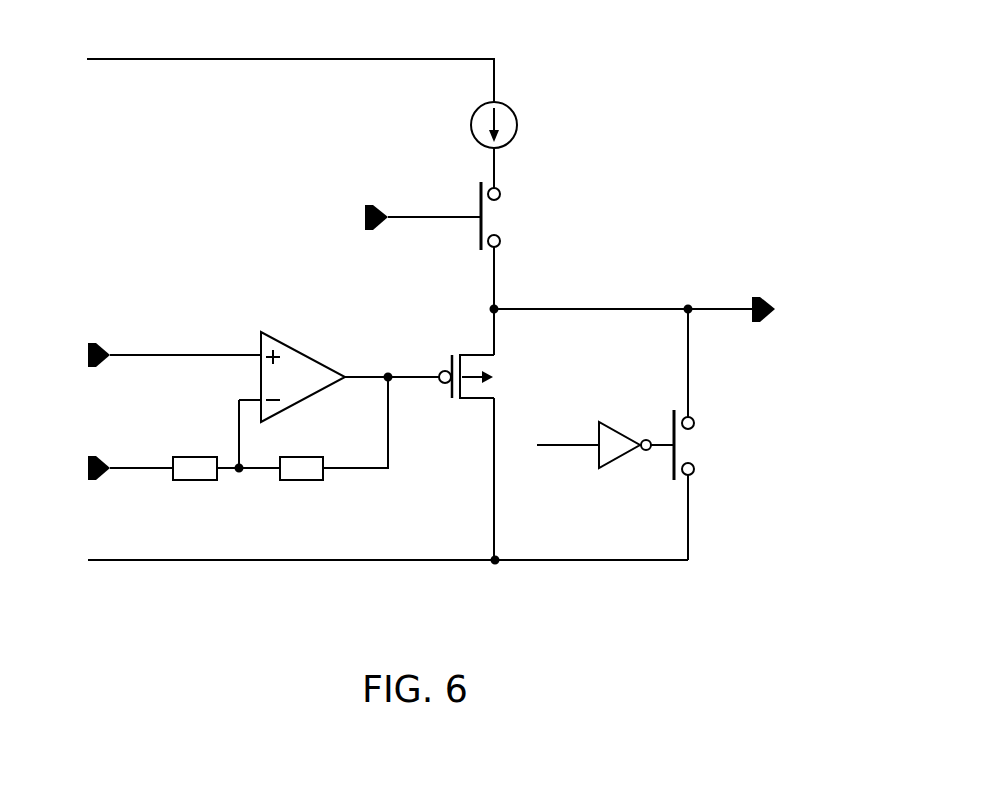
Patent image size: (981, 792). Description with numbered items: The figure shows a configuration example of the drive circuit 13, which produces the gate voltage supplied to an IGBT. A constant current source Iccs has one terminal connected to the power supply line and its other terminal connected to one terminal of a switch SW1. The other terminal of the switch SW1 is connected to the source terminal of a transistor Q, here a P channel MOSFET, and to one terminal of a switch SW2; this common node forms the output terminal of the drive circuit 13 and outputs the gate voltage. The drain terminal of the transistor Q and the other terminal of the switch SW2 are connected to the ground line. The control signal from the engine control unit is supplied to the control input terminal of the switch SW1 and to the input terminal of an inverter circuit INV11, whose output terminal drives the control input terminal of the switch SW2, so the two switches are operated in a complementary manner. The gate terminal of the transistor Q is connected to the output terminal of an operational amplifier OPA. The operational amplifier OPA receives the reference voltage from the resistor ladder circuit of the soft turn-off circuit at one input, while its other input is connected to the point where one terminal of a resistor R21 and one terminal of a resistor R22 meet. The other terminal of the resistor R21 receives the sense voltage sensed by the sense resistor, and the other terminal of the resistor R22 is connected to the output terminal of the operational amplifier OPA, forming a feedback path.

The drive circuit 13 is at (648, 56).
The constant current source Iccs is at (516, 125).
The switch SW1 is at (512, 216).
The switch SW2 is at (706, 445).
The transistor Q is at (466, 363).
The operational amplifier OPA is at (303, 377).
The resistor R21 is at (195, 455).
The resistor R22 is at (301, 457).
The inverter circuit INV11 is at (623, 431).